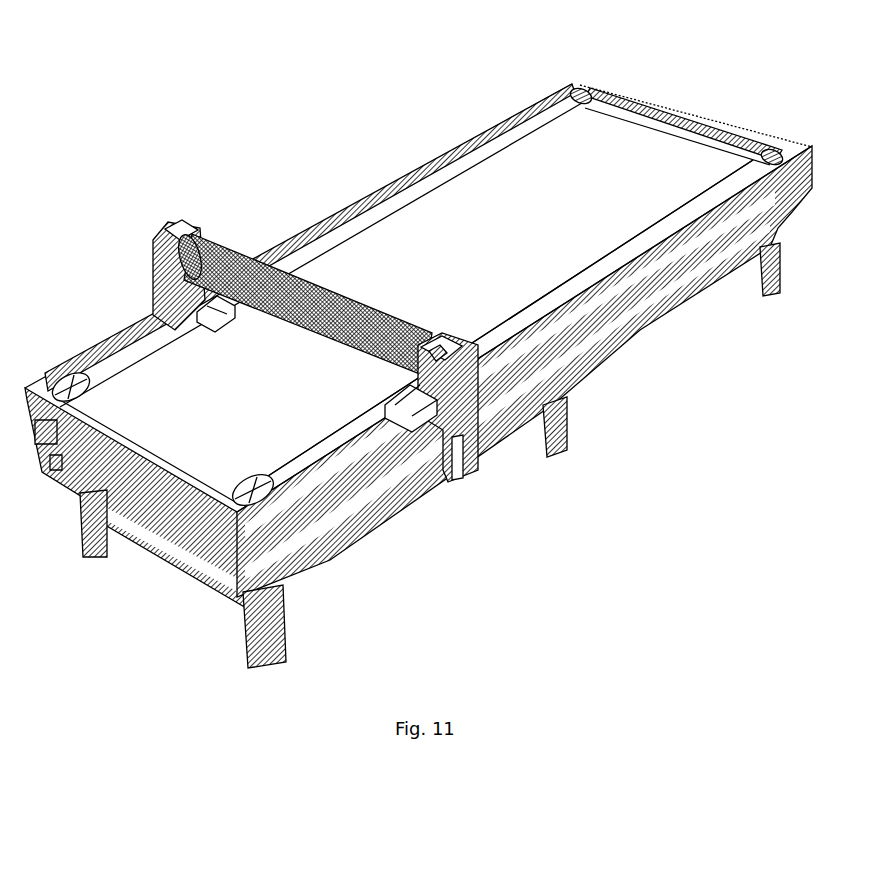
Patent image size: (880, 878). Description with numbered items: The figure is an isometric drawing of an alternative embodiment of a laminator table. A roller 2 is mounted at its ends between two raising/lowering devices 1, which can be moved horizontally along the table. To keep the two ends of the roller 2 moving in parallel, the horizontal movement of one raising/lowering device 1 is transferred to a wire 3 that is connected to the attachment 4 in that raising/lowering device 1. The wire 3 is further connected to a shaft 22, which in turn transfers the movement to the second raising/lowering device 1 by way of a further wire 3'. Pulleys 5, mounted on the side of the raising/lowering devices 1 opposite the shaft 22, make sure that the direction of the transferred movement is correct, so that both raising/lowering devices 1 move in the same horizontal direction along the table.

The raising/lowering device 1 is at (153, 257).
The roller 2 is at (210, 233).
The wire 3 is at (313, 229).
The further wire 3' is at (524, 329).
The attachment 4 is at (415, 432).
The pulley 5 is at (578, 85).
The shaft 22 is at (693, 127).